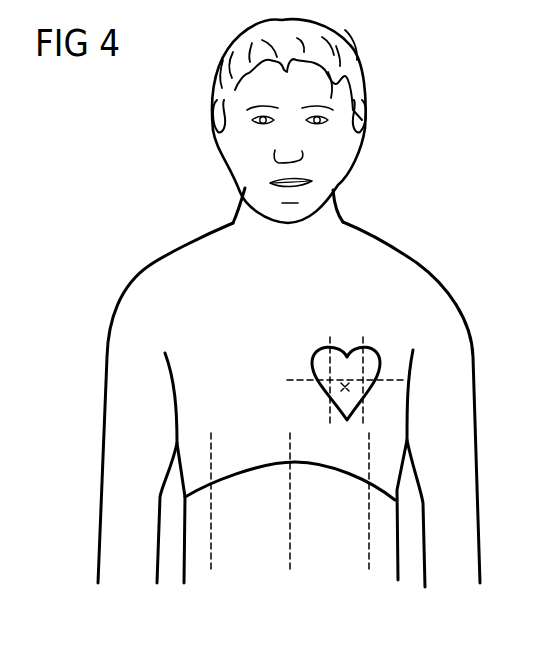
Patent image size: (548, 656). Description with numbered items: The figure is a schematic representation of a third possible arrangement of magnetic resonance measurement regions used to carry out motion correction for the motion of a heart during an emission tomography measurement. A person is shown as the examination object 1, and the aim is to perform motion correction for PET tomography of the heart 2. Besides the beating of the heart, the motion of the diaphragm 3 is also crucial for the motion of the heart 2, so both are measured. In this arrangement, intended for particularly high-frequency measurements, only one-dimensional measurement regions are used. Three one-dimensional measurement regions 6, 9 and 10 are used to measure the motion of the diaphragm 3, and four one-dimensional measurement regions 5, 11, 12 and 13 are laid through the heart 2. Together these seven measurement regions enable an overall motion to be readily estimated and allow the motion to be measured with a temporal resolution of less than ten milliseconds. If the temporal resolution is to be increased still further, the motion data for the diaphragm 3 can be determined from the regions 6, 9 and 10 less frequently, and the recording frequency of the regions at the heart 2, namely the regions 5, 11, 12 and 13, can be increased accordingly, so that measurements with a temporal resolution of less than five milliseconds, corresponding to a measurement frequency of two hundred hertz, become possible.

The examination object 1 is at (416, 233).
The heart 2 is at (375, 345).
The diaphragm 3 is at (322, 468).
The one-dimensional measurement region 5 is at (348, 384).
The one-dimensional measurement region 6 is at (290, 563).
The one-dimensional measurement region 9 is at (210, 570).
The one-dimensional measurement region 10 is at (369, 563).
The one-dimensional measurement region 11 is at (363, 412).
The one-dimensional measurement region 12 is at (330, 413).
The one-dimensional measurement region 13 is at (297, 377).